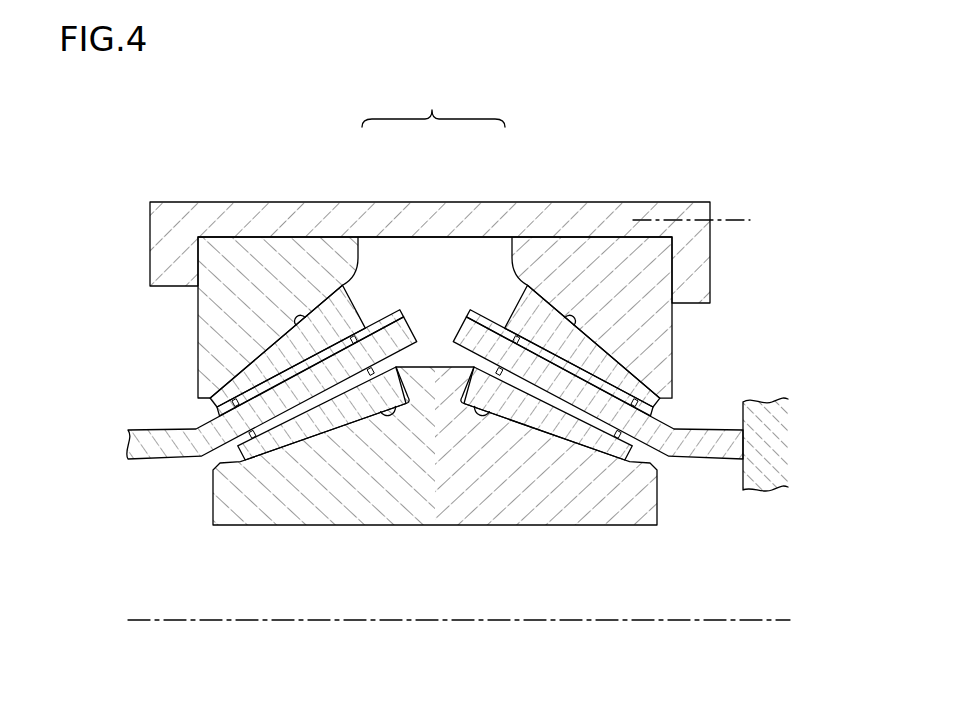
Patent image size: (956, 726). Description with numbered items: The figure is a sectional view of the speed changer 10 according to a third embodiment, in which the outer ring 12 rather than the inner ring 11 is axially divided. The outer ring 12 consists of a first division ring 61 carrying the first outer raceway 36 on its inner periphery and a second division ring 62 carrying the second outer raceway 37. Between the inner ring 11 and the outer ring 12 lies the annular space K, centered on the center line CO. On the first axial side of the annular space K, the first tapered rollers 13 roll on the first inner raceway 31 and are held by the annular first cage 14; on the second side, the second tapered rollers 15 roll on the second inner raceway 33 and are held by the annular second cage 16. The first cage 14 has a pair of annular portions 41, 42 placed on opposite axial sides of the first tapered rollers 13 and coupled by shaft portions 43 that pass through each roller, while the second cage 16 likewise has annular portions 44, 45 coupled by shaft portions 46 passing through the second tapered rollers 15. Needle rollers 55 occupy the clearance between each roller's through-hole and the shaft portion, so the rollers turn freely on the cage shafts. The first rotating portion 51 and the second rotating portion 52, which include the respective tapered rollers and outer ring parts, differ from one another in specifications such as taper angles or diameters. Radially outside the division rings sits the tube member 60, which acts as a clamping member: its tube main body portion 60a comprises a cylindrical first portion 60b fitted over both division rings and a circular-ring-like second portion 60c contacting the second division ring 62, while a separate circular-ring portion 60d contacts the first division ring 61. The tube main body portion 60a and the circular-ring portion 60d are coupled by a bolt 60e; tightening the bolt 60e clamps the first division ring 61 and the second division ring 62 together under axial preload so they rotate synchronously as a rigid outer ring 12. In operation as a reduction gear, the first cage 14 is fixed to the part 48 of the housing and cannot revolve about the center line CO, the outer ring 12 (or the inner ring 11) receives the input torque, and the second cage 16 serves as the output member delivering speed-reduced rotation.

The speed changer 10 is at (727, 289).
The inner ring 11 is at (435, 510).
The outer ring 12 is at (433, 104).
The first tapered rollers 13 is at (572, 346).
The first cage 14 is at (712, 462).
The second tapered rollers 15 is at (298, 346).
The second cage 16 is at (158, 462).
The first inner raceway 31 is at (472, 428).
The second inner raceway 33 is at (398, 428).
The first outer raceway 36 is at (570, 318).
The second outer raceway 37 is at (300, 318).
The annular portion 41 is at (715, 440).
The annular portion 42 is at (477, 322).
The shaft portions 43 is at (592, 407).
The annular portion 44 is at (393, 322).
The annular portion 45 is at (154, 440).
The shaft portions 46 is at (278, 407).
The part of the housing 48 is at (772, 402).
The first rotating portion 51 is at (623, 341).
The second rotating portion 52 is at (247, 334).
The needle rollers 55 is at (383, 414).
The tube member 60 is at (616, 197).
The tube main body portion 60a is at (222, 202).
The first portion 60b is at (258, 213).
The second portion 60c is at (162, 255).
The circular-ring portion 60d is at (690, 212).
The bolt 60e is at (735, 220).
The first division ring 61 is at (540, 247).
The second division ring 62 is at (330, 248).
The annular space K is at (189, 409).
The center line CO is at (735, 628).